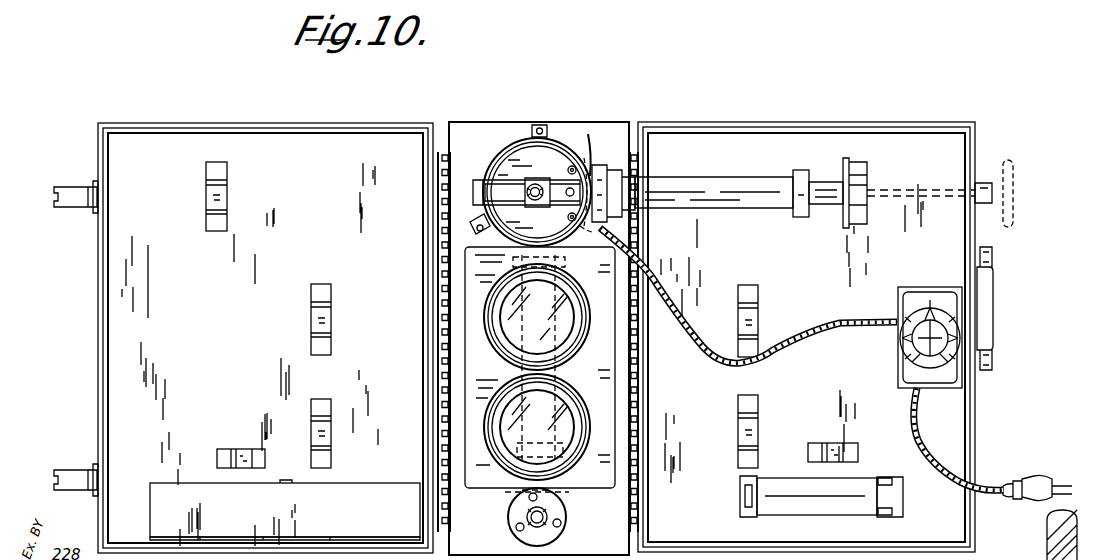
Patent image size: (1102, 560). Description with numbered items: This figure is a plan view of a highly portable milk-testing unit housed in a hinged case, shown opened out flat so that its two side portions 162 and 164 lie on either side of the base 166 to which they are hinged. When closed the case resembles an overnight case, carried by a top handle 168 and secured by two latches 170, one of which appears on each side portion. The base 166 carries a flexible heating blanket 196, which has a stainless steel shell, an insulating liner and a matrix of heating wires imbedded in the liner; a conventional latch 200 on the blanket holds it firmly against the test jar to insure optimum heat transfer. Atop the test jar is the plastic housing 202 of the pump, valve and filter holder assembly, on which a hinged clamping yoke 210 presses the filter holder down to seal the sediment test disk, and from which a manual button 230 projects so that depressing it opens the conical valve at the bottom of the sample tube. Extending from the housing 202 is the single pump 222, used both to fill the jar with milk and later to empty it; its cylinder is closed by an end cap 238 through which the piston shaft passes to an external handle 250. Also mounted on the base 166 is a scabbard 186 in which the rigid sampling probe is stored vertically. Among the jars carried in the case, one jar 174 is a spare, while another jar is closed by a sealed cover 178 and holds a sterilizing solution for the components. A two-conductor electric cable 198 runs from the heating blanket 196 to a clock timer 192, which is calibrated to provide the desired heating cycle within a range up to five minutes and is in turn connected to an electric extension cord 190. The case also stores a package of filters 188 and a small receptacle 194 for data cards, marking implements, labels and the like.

The side portion 162 is at (746, 142).
The side portion 164 is at (278, 148).
The base 166 is at (600, 132).
The top handle 168 is at (990, 310).
The latches 170 is at (76, 186).
The jar 174 is at (580, 410).
The sealed cover 178 is at (586, 300).
The scabbard 186 is at (552, 515).
The package of filters 188 is at (772, 492).
The electric extension cord 190 is at (940, 445).
The clock timer 192 is at (903, 288).
The small receptacle 194 is at (352, 482).
The flexible heating blanket 196 is at (539, 338).
The two-conductor electric cable 198 is at (808, 330).
The latch 200 is at (595, 154).
The housing 202 is at (515, 162).
The clamping yoke 210 is at (502, 180).
The pump 222 is at (672, 182).
The manual button 230 is at (564, 188).
The end cap 238 is at (800, 170).
The handle 250 is at (828, 190).